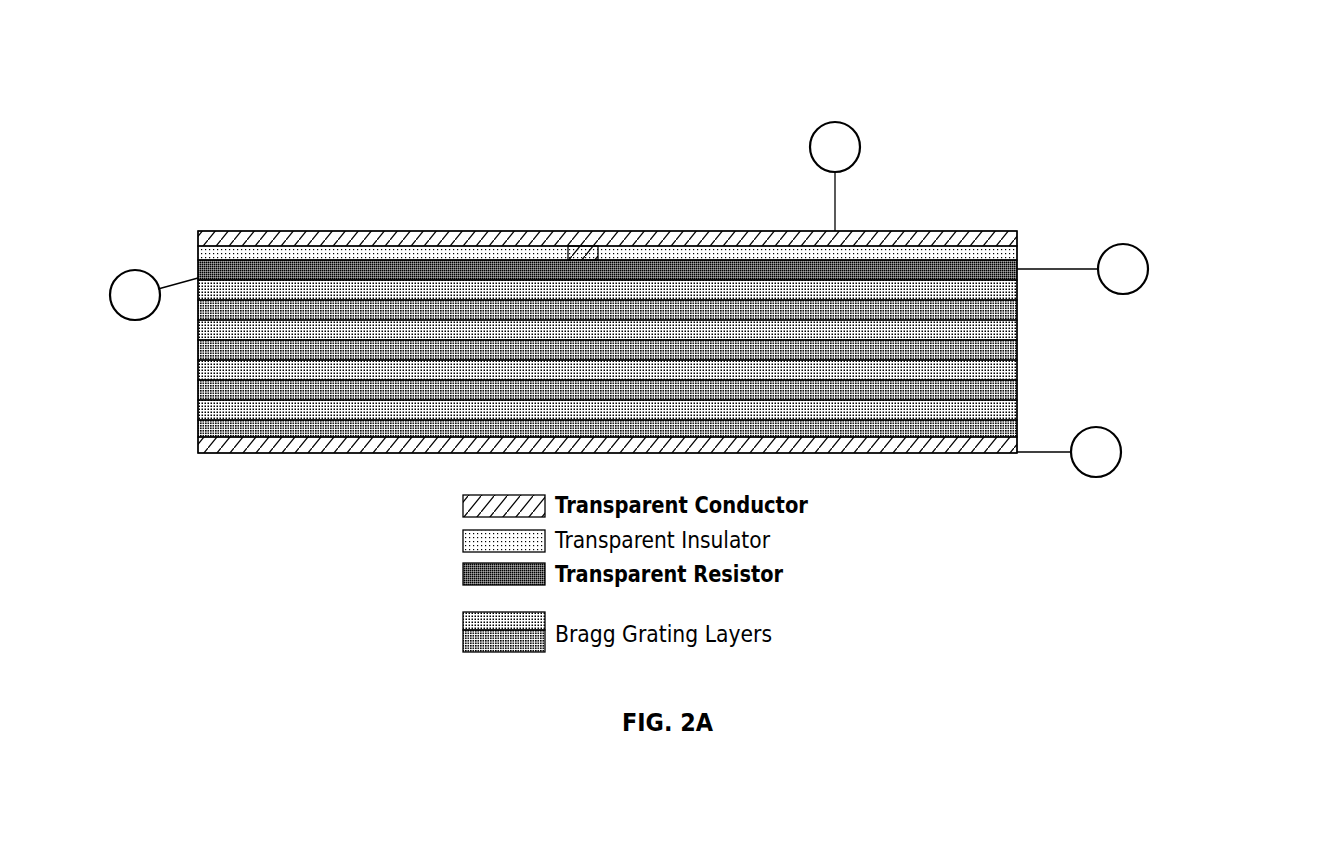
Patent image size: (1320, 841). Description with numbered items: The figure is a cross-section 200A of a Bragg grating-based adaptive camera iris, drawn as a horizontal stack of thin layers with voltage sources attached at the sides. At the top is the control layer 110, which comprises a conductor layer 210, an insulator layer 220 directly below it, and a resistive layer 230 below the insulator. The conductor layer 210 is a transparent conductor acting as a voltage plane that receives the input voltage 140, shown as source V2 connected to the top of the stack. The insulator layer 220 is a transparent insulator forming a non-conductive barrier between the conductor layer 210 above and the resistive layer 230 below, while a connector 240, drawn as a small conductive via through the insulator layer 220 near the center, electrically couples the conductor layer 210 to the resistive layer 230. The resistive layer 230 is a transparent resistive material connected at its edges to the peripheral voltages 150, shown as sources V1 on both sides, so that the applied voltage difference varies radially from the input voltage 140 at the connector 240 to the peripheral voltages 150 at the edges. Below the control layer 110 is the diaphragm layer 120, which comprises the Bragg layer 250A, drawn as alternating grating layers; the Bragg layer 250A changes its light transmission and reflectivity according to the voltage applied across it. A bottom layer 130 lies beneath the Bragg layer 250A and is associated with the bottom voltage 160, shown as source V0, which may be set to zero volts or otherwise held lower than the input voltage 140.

The cross-section 200A is at (117, 97).
The control layer 110 is at (624, 264).
The diaphragm layer 120 is at (727, 364).
The bottom layer 130 is at (197, 453).
The input voltage 140 is at (945, 121).
The peripheral voltages 150 is at (1263, 293).
The bottom voltage 160 is at (1121, 453).
The conductor layer 210 is at (982, 233).
The insulator layer 220 is at (1151, 229).
The resistive layer 230 is at (245, 276).
The connector 240 is at (583, 259).
The Bragg layer 250A is at (688, 358).